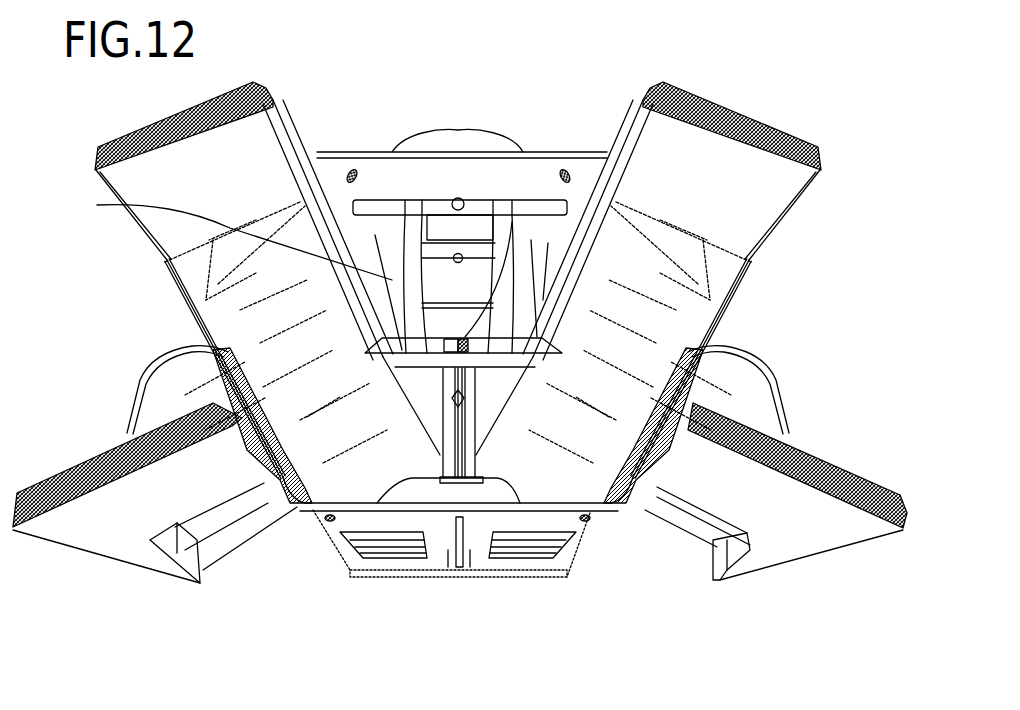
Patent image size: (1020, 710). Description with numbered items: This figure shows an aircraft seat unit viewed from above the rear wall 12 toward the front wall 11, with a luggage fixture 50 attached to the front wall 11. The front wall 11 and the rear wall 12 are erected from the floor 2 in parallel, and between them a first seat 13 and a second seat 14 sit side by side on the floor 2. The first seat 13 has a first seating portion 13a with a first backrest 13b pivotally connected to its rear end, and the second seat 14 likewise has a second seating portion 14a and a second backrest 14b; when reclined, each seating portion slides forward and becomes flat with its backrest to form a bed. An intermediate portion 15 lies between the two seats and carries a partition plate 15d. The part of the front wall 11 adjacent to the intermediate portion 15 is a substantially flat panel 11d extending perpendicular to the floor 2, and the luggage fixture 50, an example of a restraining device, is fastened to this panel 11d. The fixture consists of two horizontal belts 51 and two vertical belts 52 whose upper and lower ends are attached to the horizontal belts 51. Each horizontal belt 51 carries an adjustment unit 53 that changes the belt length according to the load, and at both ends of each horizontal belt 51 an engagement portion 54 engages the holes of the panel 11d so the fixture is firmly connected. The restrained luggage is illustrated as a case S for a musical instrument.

The floor 2 is at (279, 595).
The front wall 11 is at (823, 148).
The panel 11d is at (457, 221).
The rear wall 12 is at (868, 533).
The first seat 13 is at (490, 480).
The first seating portion 13a is at (700, 300).
The first backrest 13b is at (607, 487).
The second seat 14 is at (417, 480).
The second seating portion 14a is at (320, 338).
The second backrest 14b is at (327, 483).
The intermediate portion 15 is at (497, 398).
The partition plate 15d is at (463, 440).
The luggage fixture 50 is at (600, 345).
The horizontal belt 51 is at (397, 260).
The vertical belt 52 is at (417, 199).
The adjustment unit 53 is at (458, 198).
The engagement portion 54 is at (320, 150).
The case S is at (231, 237).